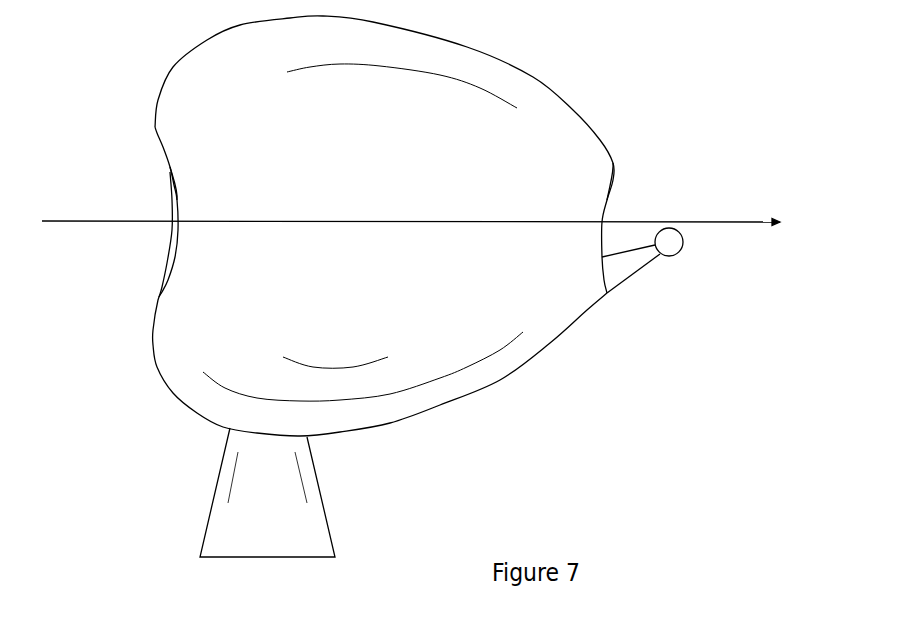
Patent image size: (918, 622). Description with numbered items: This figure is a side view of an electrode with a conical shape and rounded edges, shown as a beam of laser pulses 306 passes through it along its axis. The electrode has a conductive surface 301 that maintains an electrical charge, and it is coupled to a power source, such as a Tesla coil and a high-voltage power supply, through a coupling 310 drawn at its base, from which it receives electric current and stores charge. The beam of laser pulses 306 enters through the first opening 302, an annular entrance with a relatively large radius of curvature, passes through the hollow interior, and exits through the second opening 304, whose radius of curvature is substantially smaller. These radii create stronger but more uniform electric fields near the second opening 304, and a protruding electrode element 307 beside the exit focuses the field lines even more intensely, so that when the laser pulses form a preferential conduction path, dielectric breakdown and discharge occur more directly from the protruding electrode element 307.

The conductive surface 301 is at (425, 358).
The first opening 302 is at (177, 200).
The second opening 304 is at (615, 180).
The beam of laser pulses 306 is at (702, 222).
The protruding electrode element 307 is at (678, 257).
The coupling 310 is at (315, 522).